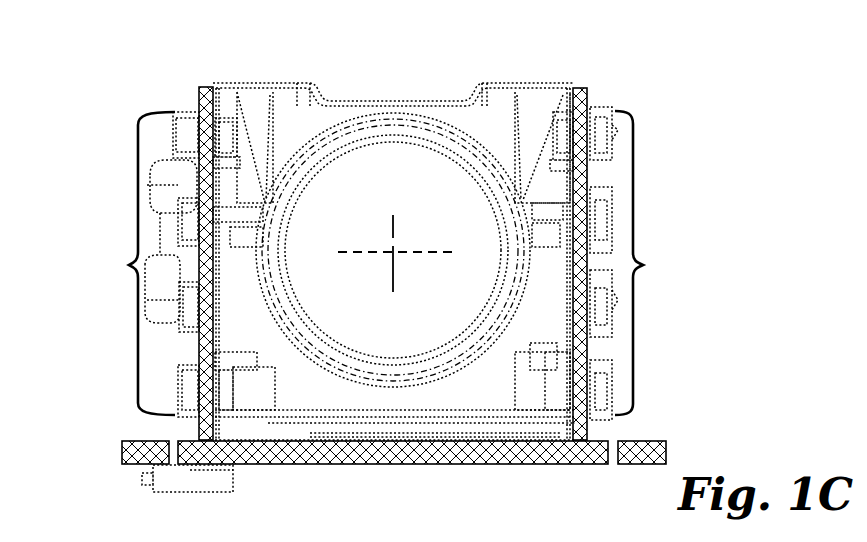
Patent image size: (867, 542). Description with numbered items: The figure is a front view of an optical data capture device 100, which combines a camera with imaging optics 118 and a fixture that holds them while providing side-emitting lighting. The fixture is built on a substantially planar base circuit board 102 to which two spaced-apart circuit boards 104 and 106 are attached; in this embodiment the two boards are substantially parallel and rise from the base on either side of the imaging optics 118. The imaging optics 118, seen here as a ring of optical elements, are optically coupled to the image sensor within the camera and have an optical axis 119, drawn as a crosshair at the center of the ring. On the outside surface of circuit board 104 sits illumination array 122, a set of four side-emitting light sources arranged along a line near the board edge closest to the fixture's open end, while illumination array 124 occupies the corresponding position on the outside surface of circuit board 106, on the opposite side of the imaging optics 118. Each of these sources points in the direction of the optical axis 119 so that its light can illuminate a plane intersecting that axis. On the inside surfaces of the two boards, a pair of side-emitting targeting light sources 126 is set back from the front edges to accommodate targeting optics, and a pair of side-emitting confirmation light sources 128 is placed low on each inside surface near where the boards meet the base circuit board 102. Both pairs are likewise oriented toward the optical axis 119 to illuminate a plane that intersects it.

The optical data capture device 100 is at (87, 68).
The base circuit board 102 is at (410, 452).
The circuit board 104 is at (581, 79).
The circuit board 106 is at (206, 78).
The imaging optics 118 is at (394, 126).
The optical axis 119 is at (396, 256).
The illumination array 122 is at (638, 263).
The illumination array 124 is at (143, 264).
The side-emitting targeting light sources 126 is at (224, 137).
The side-emitting confirmation light sources 128 is at (228, 404).